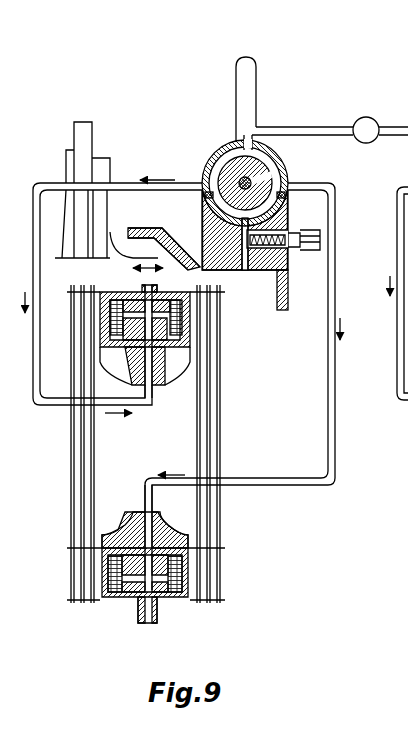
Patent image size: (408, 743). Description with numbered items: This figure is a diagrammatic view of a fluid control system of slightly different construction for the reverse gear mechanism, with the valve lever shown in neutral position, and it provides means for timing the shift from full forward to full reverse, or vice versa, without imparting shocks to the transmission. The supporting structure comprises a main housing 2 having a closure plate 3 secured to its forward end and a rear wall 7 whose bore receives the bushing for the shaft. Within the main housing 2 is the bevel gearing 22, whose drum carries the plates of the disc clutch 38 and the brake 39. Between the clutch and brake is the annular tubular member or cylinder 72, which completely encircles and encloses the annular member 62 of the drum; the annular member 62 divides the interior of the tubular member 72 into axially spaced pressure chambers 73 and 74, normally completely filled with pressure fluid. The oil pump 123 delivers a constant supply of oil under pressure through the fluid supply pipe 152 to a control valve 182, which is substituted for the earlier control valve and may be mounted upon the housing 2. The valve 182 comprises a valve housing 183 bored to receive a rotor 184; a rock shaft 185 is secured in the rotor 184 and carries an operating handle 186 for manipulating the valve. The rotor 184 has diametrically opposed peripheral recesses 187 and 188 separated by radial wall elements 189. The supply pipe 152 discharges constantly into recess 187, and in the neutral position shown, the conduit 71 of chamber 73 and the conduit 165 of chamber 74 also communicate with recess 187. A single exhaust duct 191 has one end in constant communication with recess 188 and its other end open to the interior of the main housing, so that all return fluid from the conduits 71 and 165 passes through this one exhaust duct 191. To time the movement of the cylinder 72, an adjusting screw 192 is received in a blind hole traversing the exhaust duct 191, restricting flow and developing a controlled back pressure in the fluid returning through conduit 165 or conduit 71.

The main housing 2 is at (148, 228).
The closure plate 3 is at (88, 124).
The rear wall 7 is at (288, 278).
The bevel gearing 22 is at (163, 383).
The disc clutch 38 is at (82, 505).
The brake 39 is at (213, 456).
The annular member 62 is at (135, 600).
The fluid conduit 71 is at (33, 252).
The annular tubular member 72 is at (110, 604).
The pressure chamber 73 is at (118, 296).
The pressure chamber 74 is at (174, 598).
The oil pump 123 is at (371, 120).
The conduit 152 is at (318, 126).
The conduit 165 is at (335, 252).
The control valve 182 is at (292, 175).
The valve housing 183 is at (205, 214).
The rotor 184 is at (262, 170).
The rock shaft 185 is at (252, 183).
The operating handle 186 is at (253, 68).
The peripheral recess 187 is at (226, 160).
The peripheral recess 188 is at (290, 213).
The radial wall elements 189 is at (212, 198).
The exhaust duct 191 is at (242, 229).
The adjusting screw 192 is at (268, 246).